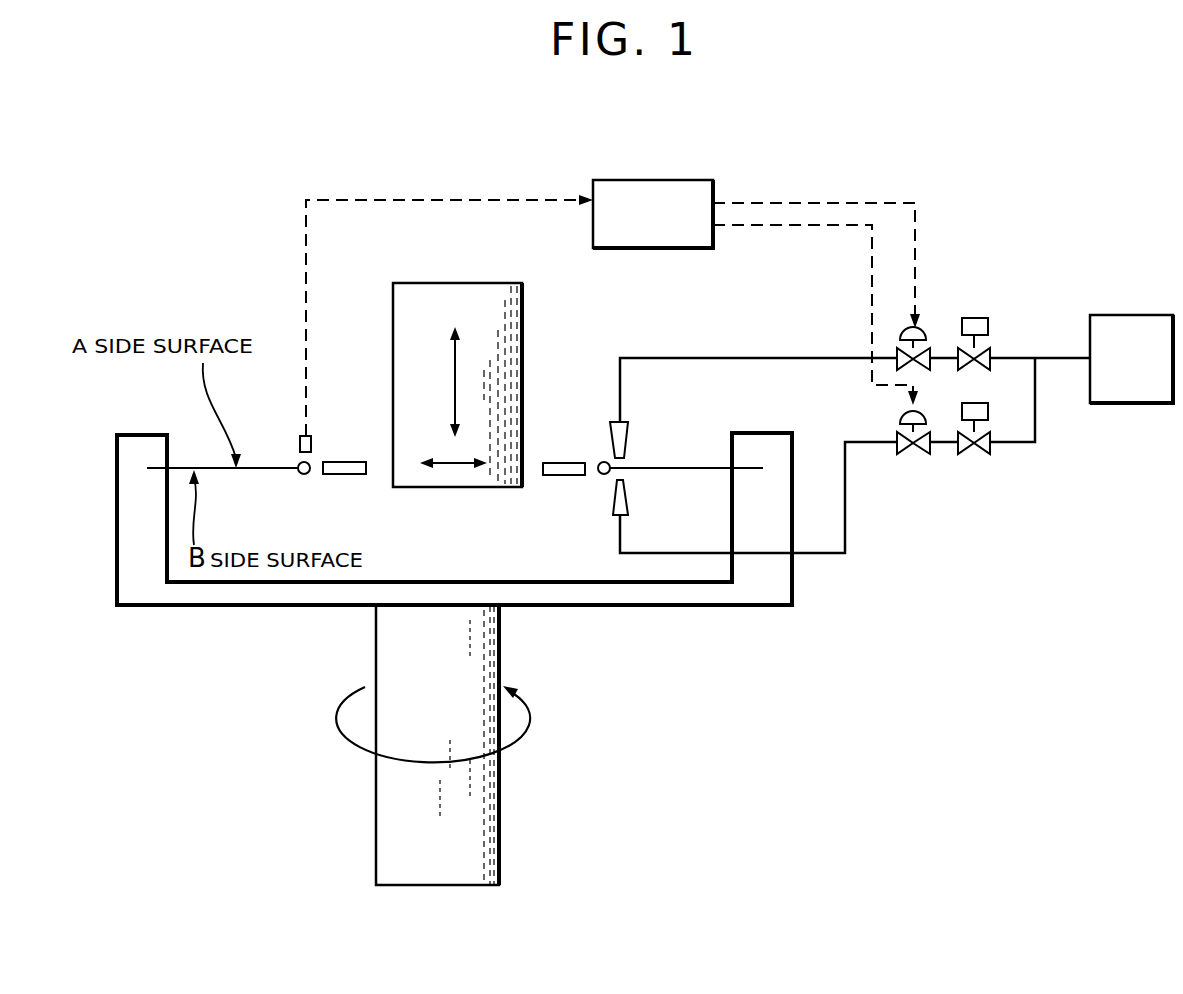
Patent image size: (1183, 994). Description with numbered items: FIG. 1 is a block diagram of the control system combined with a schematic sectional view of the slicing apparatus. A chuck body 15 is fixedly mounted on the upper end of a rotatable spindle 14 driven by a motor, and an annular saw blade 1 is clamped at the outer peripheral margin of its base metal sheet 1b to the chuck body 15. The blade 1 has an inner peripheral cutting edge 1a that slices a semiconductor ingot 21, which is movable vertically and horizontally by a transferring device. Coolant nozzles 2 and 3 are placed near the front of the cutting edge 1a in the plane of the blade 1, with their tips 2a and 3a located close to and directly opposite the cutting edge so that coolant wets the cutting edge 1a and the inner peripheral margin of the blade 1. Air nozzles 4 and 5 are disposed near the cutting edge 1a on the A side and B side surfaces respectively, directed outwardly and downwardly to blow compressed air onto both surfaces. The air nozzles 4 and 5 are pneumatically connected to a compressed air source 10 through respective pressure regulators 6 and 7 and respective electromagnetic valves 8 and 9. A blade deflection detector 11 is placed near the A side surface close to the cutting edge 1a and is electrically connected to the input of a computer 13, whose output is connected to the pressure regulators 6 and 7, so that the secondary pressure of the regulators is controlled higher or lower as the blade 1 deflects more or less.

The annular saw blade 1 is at (680, 446).
The cutting edge 1a is at (310, 472).
The base metal sheet 1b is at (203, 465).
The coolant nozzle 2 is at (345, 462).
The tip of coolant nozzle 2a is at (320, 462).
The coolant nozzle 3 is at (558, 463).
The tip of coolant nozzle 3a is at (585, 478).
The air nozzle 4 is at (628, 430).
The air nozzle 5 is at (612, 508).
The pressure regulator 6 is at (928, 350).
The pressure regulator 7 is at (920, 453).
The electromagnetic valve 8 is at (995, 325).
The electromagnetic valve 9 is at (975, 453).
The compressed air source 10 is at (1130, 315).
The blade deflection detector 11 is at (300, 440).
The computer 13 is at (672, 180).
The rotatable spindle 14 is at (499, 640).
The chuck body 15 is at (117, 516).
The semiconductor ingot 21 is at (522, 318).